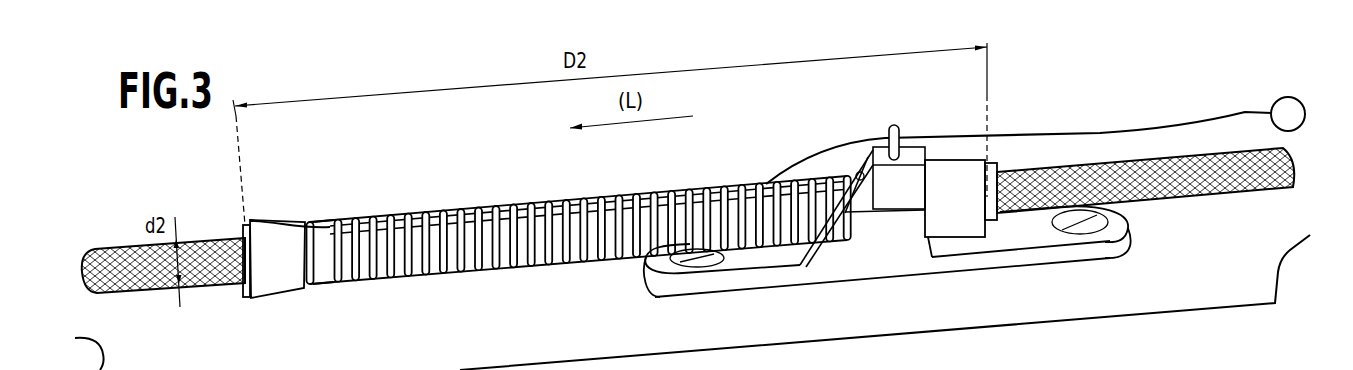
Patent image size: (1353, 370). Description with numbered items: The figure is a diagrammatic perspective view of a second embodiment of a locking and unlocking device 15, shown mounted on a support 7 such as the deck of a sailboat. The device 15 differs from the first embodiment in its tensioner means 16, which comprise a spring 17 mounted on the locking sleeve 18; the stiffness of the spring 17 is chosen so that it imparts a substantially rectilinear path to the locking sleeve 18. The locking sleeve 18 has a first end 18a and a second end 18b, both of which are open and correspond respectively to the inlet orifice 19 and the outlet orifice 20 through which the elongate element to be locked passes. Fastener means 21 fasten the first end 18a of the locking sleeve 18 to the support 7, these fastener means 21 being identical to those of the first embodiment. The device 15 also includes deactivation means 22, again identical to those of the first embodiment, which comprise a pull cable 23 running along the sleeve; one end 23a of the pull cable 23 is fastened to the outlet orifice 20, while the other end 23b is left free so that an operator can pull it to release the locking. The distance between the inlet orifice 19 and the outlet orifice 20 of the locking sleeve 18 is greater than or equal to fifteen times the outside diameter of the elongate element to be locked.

The support 7 is at (500, 338).
The locking and unlocking device 15 is at (529, 187).
The tensioner means 16 is at (423, 194).
The spring 17 is at (600, 263).
The locking sleeve 18 is at (403, 270).
The first end of the locking sleeve 18a is at (962, 185).
The second end of the locking sleeve 18b is at (262, 252).
The inlet orifice 19 is at (972, 220).
The outlet orifice 20 is at (271, 300).
The fastener means 21 is at (866, 247).
The deactivation means 22 is at (1098, 118).
The pull cable 23 is at (1198, 112).
The end of the pull cable 23a is at (247, 226).
The free end of the pull cable 23b is at (1287, 107).